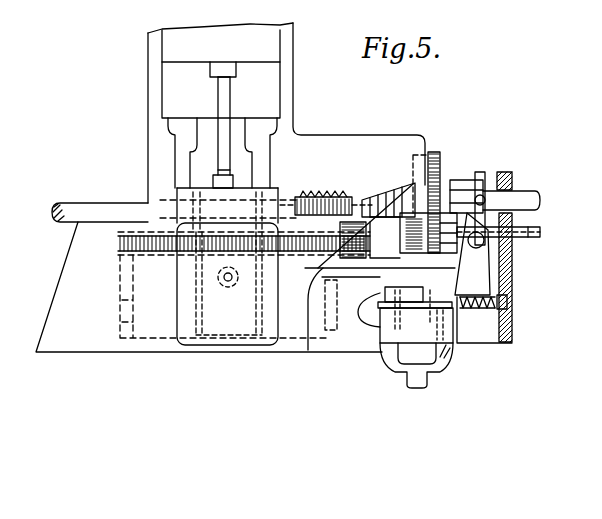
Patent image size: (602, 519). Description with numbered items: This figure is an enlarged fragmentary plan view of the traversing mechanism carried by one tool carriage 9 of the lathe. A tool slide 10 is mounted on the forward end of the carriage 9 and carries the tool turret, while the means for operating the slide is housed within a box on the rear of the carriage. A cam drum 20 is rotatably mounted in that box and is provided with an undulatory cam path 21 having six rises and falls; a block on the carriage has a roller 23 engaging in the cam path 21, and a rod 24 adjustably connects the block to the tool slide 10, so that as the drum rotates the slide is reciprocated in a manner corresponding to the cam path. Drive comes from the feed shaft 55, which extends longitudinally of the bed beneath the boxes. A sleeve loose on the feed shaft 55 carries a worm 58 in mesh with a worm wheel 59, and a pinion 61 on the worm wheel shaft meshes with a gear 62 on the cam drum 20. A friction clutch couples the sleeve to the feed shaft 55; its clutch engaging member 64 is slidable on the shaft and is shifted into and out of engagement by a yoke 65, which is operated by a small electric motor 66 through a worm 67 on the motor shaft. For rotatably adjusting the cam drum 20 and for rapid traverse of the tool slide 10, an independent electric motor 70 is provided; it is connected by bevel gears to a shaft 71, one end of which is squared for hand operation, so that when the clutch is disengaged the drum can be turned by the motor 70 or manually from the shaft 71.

The tool carriage 9 is at (158, 137).
The tool slide 10 is at (162, 48).
The cam drum 20 is at (148, 352).
The cam path 21 is at (132, 305).
The roller 23 is at (222, 284).
The rod 24 is at (218, 96).
The feed shaft 55 is at (105, 203).
The worm 58 is at (328, 190).
The worm wheel 59 is at (397, 194).
The pinion 61 is at (346, 263).
The gear 62 is at (118, 242).
The clutch engaging member 64 is at (480, 178).
The yoke 65 is at (484, 278).
The electric motor 66 is at (373, 312).
The worm 67 is at (471, 308).
The electric motor 70 is at (396, 356).
The shaft 71 is at (528, 238).